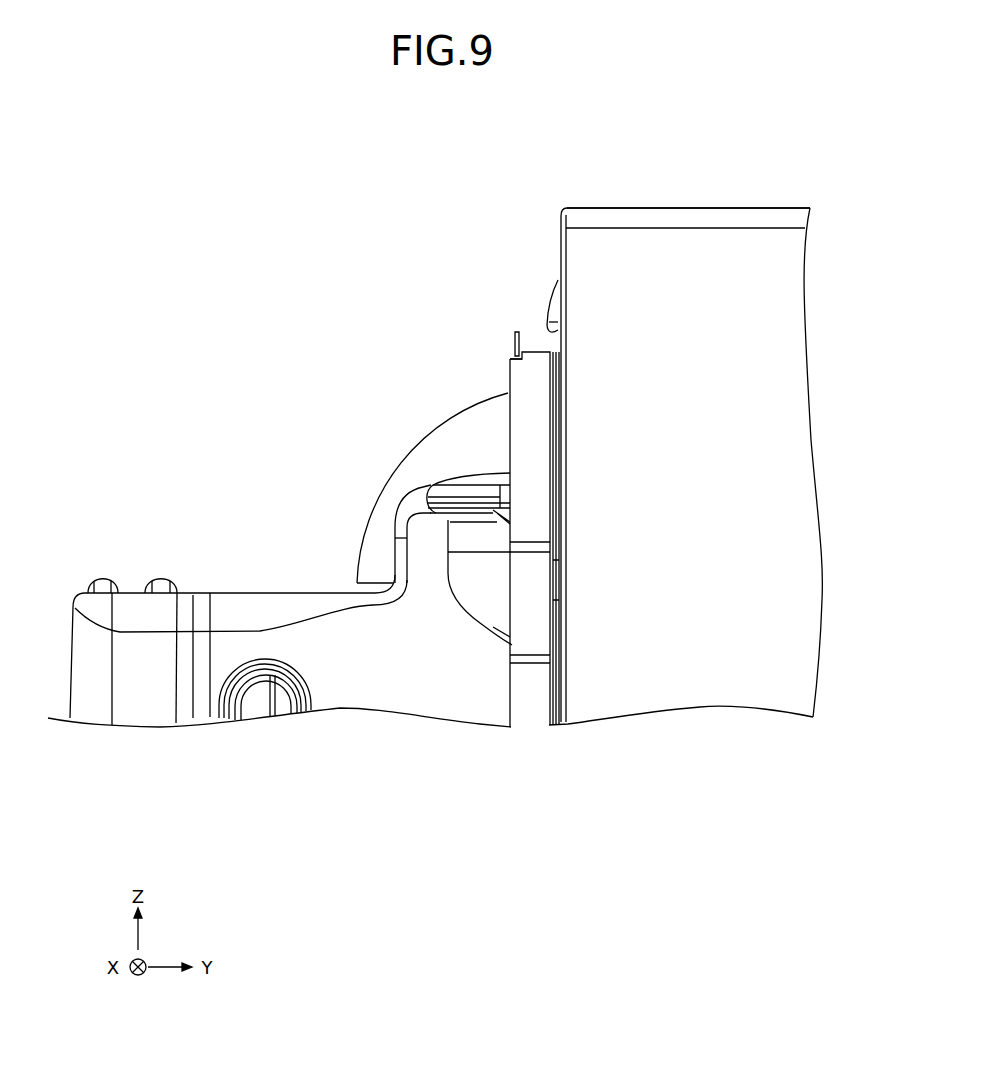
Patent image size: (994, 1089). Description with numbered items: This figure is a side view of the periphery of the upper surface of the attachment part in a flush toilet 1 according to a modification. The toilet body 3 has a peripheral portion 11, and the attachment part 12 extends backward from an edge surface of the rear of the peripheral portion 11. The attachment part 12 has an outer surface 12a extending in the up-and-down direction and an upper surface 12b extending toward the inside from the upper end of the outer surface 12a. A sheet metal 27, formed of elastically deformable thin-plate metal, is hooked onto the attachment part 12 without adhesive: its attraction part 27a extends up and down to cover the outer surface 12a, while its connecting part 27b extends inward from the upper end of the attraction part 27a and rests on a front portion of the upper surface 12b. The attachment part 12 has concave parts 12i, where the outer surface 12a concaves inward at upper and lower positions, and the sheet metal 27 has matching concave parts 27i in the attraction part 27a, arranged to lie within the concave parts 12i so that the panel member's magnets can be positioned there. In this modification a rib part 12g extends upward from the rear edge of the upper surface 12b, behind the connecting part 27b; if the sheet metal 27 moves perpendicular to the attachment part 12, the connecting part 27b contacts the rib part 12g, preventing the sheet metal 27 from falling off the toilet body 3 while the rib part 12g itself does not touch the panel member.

The flush toilet 1 is at (718, 167).
The toilet body 3 is at (612, 206).
The peripheral portion 11 is at (770, 257).
The attachment part 12 is at (602, 538).
The outer surface 12a is at (557, 412).
The upper surface 12b is at (466, 368).
The rib part 12g is at (513, 336).
The concave part 12i is at (557, 580).
The sheet metal 27 is at (526, 547).
The attraction part 27a is at (540, 468).
The connecting part 27b is at (540, 347).
The concave part 27i is at (540, 610).